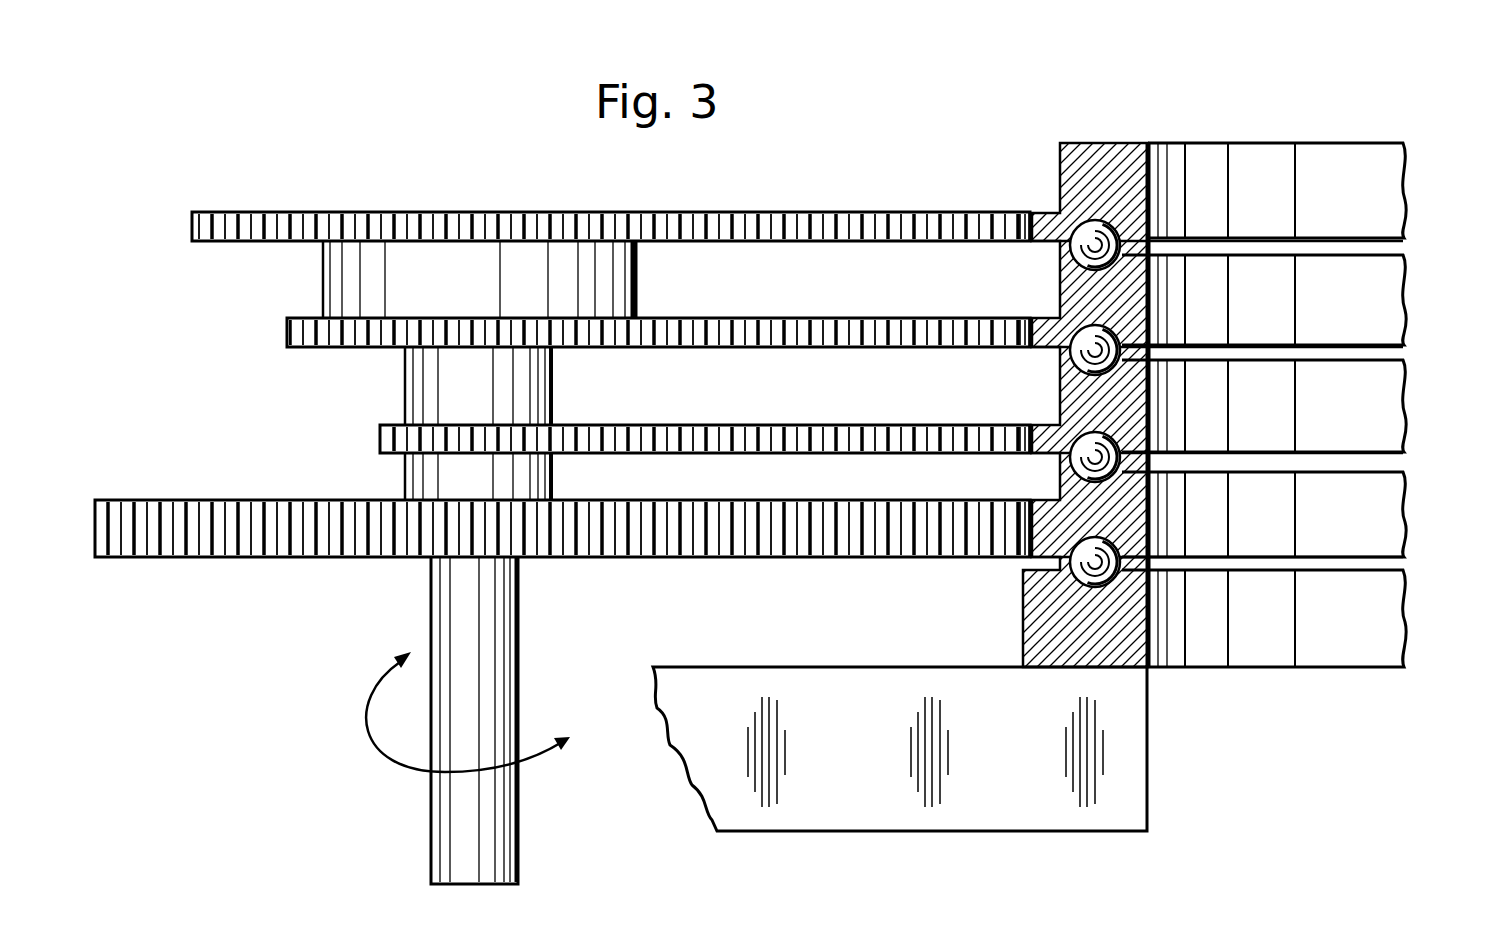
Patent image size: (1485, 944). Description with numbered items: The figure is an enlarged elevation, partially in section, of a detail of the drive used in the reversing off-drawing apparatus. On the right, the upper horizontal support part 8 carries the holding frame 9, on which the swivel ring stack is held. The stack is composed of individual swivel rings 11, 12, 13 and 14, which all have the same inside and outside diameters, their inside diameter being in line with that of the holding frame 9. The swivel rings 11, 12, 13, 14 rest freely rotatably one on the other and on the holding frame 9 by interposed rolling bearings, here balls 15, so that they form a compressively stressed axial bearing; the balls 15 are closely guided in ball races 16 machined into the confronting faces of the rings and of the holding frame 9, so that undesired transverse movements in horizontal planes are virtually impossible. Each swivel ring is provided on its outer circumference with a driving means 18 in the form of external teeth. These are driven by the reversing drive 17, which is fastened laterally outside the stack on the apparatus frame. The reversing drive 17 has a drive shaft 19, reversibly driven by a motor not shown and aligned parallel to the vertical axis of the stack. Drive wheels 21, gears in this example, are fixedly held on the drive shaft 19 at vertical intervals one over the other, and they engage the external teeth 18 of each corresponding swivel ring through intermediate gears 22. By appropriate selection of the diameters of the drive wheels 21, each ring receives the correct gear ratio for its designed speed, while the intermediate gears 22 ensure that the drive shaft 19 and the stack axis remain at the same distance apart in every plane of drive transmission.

The upper horizontal support part 8 is at (1127, 762).
The holding frame 9 is at (1348, 620).
The swivel ring 11 is at (1376, 532).
The swivel ring 12 is at (1376, 429).
The swivel ring 13 is at (1378, 280).
The swivel ring 14 is at (1290, 162).
The balls 15 is at (1095, 243).
The ball races 16 is at (1085, 230).
The reversing drive 17 is at (562, 367).
The driving means 18 is at (1003, 215).
The drive shaft 19 is at (441, 830).
The drive wheels 21 is at (240, 212).
The intermediate gears 22 is at (750, 322).